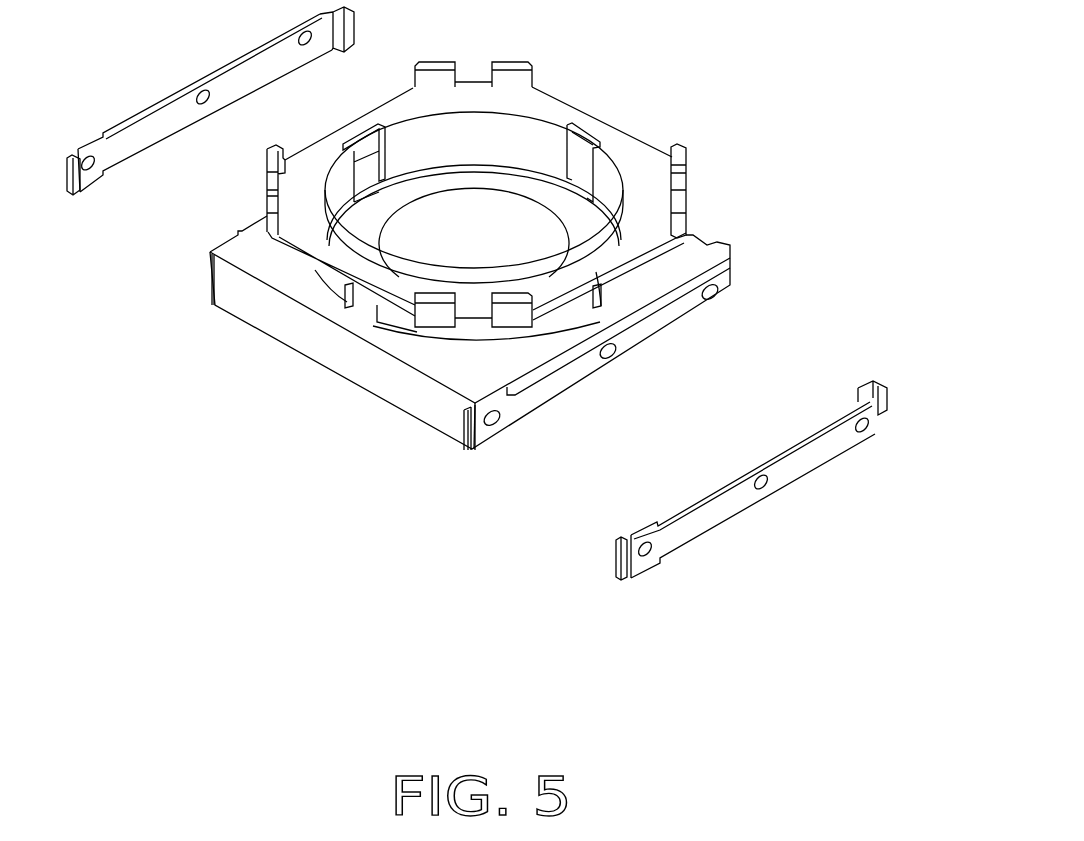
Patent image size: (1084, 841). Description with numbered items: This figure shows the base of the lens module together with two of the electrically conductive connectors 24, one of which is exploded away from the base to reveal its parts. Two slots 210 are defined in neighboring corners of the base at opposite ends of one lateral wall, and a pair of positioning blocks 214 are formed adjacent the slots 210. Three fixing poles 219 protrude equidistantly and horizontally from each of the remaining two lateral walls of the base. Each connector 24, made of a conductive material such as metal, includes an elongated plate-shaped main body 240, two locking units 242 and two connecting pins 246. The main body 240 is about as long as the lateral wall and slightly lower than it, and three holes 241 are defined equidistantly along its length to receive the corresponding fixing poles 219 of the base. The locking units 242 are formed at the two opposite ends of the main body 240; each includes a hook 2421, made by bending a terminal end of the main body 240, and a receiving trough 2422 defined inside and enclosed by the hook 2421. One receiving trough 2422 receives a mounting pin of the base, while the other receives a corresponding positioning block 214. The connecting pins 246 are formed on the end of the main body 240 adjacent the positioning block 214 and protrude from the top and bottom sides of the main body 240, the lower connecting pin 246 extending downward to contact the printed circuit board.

The connector 24 is at (254, 67).
The slot 210 is at (468, 440).
The positioning block 214 is at (474, 443).
The fixing pole 219 is at (718, 297).
The main body 240 is at (727, 505).
The hole 241 is at (866, 432).
The locking unit 242 is at (633, 495).
The hook 2421 is at (620, 572).
The receiving trough 2422 is at (623, 543).
The connecting pin 246 is at (647, 568).